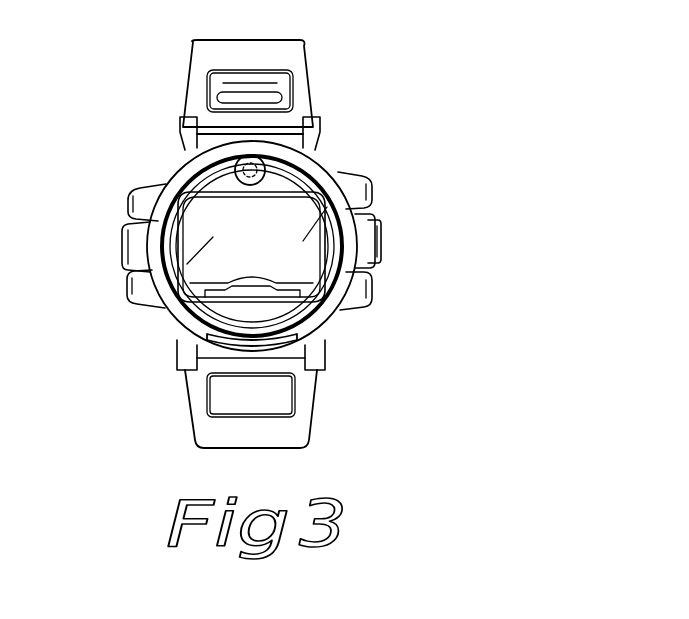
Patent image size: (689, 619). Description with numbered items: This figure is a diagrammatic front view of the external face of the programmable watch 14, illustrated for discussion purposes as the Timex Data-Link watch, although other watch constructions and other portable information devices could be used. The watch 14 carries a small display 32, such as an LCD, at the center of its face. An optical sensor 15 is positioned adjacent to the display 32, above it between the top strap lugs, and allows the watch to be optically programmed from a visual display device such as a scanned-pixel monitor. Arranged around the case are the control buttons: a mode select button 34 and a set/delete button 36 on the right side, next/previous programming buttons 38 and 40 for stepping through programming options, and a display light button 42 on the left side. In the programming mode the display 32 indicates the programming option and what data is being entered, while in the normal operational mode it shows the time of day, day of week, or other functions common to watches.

The programmable watch 14 is at (439, 78).
The optical sensor 15 is at (263, 166).
The display 32 is at (243, 207).
The mode select button 34 is at (383, 247).
The set/delete button 36 is at (373, 293).
The next/previous programming button 38 is at (370, 192).
The next/previous programming button 40 is at (128, 292).
The display light button 42 is at (128, 203).